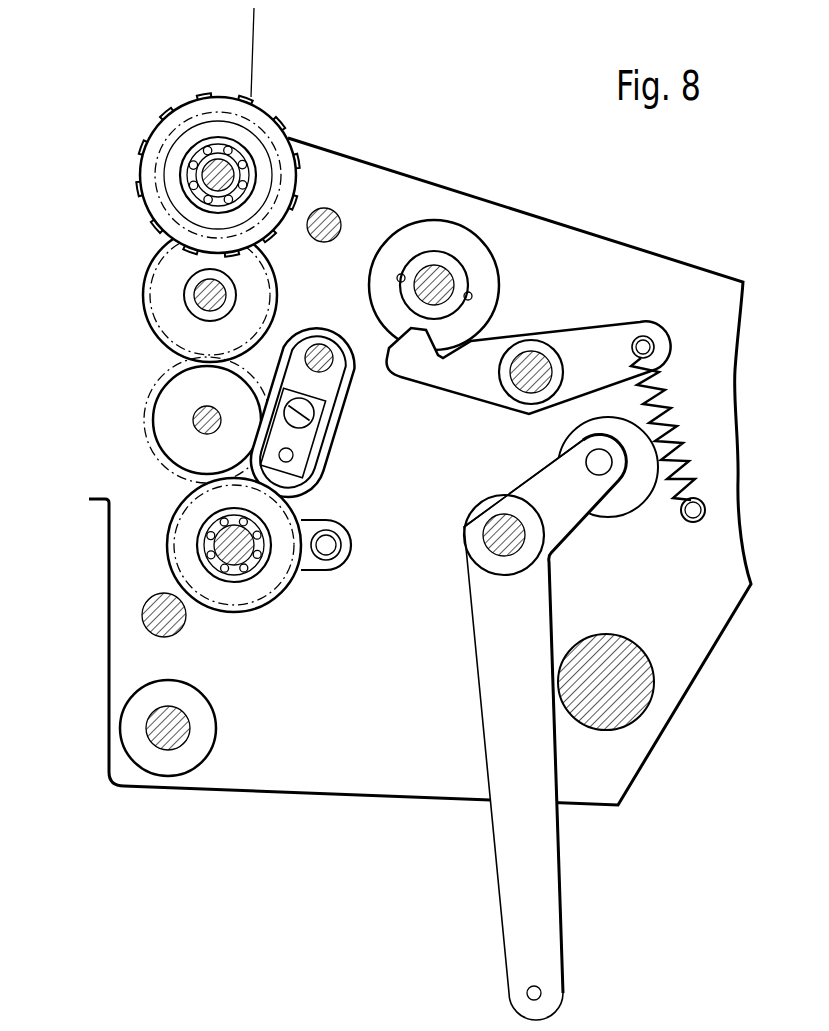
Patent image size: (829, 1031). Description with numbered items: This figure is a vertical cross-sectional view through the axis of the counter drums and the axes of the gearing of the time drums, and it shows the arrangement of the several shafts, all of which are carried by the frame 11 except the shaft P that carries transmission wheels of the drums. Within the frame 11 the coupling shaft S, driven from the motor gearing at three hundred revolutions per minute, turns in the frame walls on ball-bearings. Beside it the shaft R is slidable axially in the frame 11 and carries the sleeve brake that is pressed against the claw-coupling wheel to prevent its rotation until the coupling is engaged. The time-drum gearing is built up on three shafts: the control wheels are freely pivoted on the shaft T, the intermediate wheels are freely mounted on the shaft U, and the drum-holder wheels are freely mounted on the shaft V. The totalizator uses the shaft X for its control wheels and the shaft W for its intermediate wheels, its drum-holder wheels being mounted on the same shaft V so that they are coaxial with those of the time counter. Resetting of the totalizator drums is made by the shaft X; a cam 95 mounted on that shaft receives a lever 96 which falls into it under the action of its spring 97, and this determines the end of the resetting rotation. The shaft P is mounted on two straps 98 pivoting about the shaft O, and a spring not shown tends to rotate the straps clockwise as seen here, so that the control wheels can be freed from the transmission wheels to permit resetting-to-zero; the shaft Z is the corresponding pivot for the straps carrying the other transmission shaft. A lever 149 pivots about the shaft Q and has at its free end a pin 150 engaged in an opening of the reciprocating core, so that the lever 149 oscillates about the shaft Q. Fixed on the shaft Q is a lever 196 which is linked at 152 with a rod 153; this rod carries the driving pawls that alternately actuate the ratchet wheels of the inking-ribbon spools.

The frame 11 is at (345, 775).
The shaft V is at (210, 173).
The shaft U is at (202, 298).
The shaft T is at (197, 423).
The coupling shaft S is at (212, 542).
The shaft R is at (147, 627).
The shaft W is at (333, 216).
The shaft O is at (318, 346).
The shaft P is at (290, 457).
The shaft Q is at (495, 535).
The shaft X is at (448, 287).
The shaft Z is at (537, 352).
The cam 95 is at (465, 243).
The lever 96 is at (474, 388).
The spring 97 is at (660, 417).
The straps 98 is at (328, 387).
The rod 153 is at (583, 435).
The link 152 is at (602, 470).
The lever 196 is at (560, 502).
The lever 149 is at (513, 862).
The pin 150 is at (540, 993).